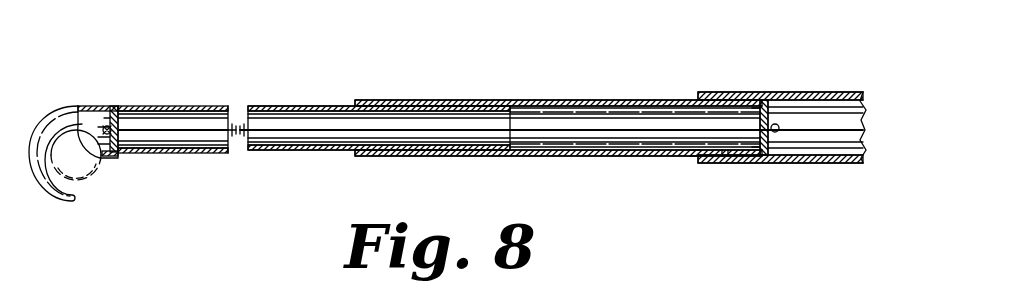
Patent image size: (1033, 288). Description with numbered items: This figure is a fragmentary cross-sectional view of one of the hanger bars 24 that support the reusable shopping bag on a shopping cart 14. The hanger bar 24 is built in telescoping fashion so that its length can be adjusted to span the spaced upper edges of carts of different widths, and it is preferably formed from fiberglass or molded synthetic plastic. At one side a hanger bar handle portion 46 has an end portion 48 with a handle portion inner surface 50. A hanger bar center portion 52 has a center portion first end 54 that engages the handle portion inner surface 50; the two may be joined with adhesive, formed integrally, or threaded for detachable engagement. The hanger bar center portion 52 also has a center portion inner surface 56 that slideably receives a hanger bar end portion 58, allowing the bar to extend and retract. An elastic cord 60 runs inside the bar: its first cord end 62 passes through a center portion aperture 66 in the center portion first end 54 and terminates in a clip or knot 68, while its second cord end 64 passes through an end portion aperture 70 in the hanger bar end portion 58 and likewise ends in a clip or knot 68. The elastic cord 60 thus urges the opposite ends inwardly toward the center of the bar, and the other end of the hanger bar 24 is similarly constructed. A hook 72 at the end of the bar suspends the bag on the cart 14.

The shopping cart 14 is at (83, 180).
The hanger bar 24 is at (450, 100).
The hanger bar handle portion 46 is at (843, 92).
The end portion 48 is at (738, 92).
The handle portion inner surface 50 is at (707, 161).
The hanger bar center portion 52 is at (510, 108).
The center portion first end 54 is at (697, 146).
The center portion inner surface 56 is at (592, 113).
The hanger bar end portion 58 is at (330, 106).
The elastic cord 60 is at (288, 128).
The first cord end 62 is at (724, 157).
The second cord end 64 is at (148, 148).
The center portion aperture 66 is at (764, 158).
The clip or knot 68 is at (107, 127).
The end portion aperture 70 is at (115, 153).
The hook 72 is at (50, 105).